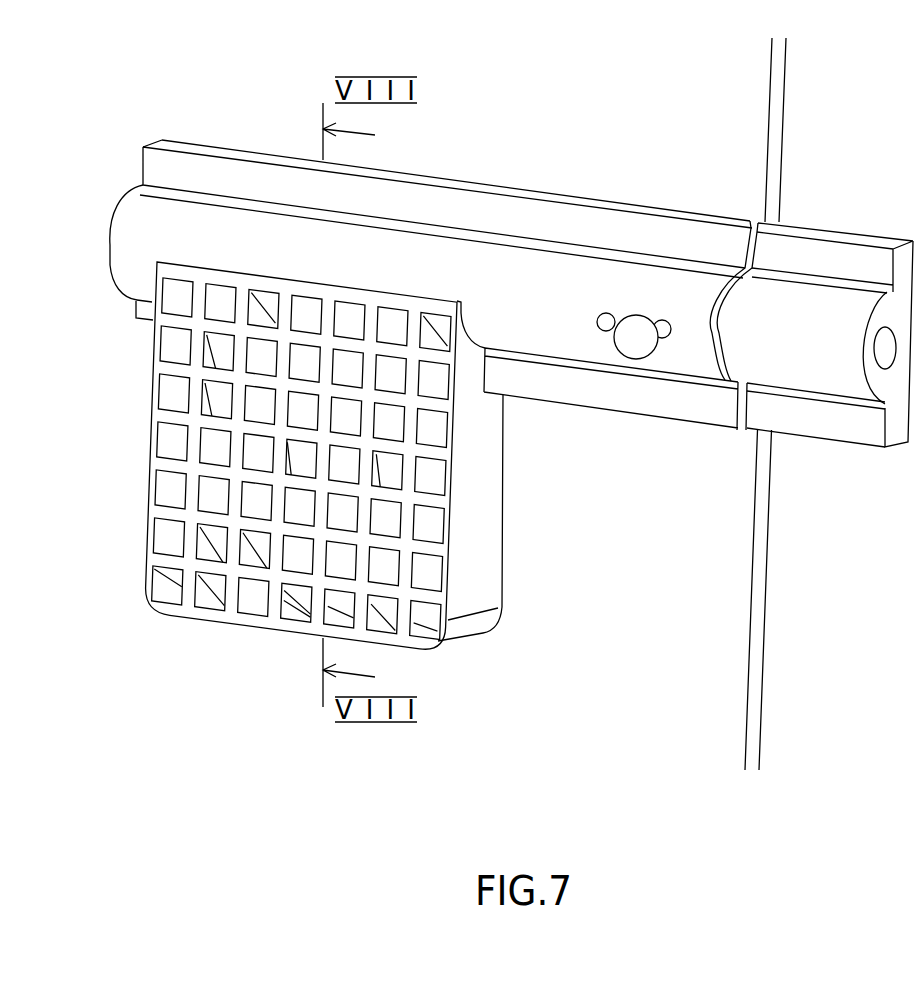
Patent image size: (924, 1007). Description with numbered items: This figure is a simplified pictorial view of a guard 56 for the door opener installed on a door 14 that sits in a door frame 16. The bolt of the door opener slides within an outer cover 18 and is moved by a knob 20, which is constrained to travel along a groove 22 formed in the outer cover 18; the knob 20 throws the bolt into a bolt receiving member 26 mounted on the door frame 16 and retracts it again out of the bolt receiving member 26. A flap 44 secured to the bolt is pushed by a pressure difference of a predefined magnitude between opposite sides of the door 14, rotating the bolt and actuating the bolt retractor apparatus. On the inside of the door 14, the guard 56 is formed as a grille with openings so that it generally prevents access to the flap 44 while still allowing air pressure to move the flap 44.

The door 14 is at (511, 300).
The door frame 16 is at (865, 105).
The outer cover 18 is at (442, 207).
The knob 20 is at (643, 325).
The groove 22 is at (600, 318).
The bolt receiving member 26 is at (847, 420).
The flap 44 is at (393, 617).
The guard 56 is at (468, 582).